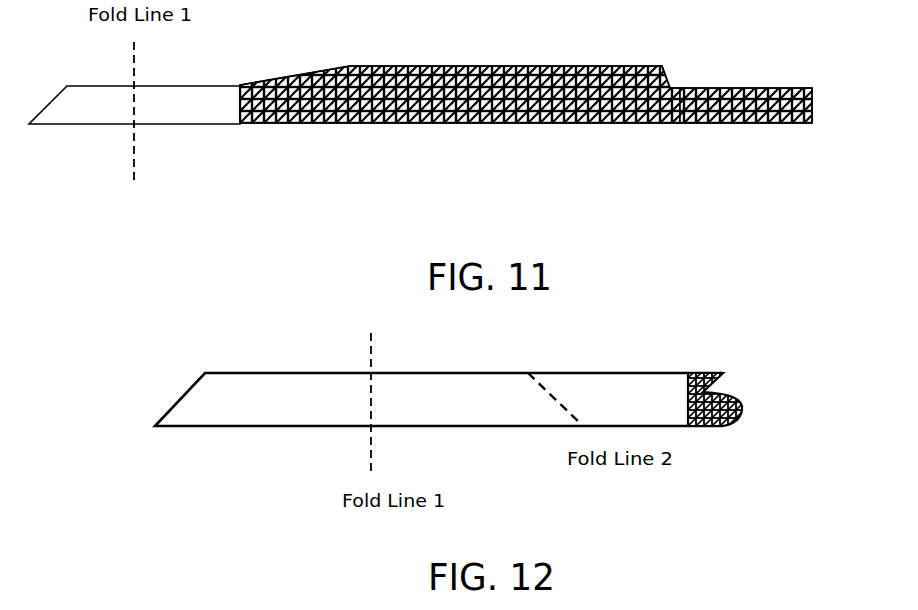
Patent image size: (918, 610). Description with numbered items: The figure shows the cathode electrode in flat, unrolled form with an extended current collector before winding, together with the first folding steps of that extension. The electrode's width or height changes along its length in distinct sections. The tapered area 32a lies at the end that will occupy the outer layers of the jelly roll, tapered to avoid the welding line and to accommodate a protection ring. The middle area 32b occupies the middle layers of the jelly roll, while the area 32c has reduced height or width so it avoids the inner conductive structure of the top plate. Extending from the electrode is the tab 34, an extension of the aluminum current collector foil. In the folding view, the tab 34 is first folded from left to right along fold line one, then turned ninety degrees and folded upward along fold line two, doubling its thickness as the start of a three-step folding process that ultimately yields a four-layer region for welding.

The tab 34 is at (112, 113).
The tapered area 32a is at (250, 122).
The middle area 32b is at (485, 110).
The reduced-height area 32c is at (785, 115).